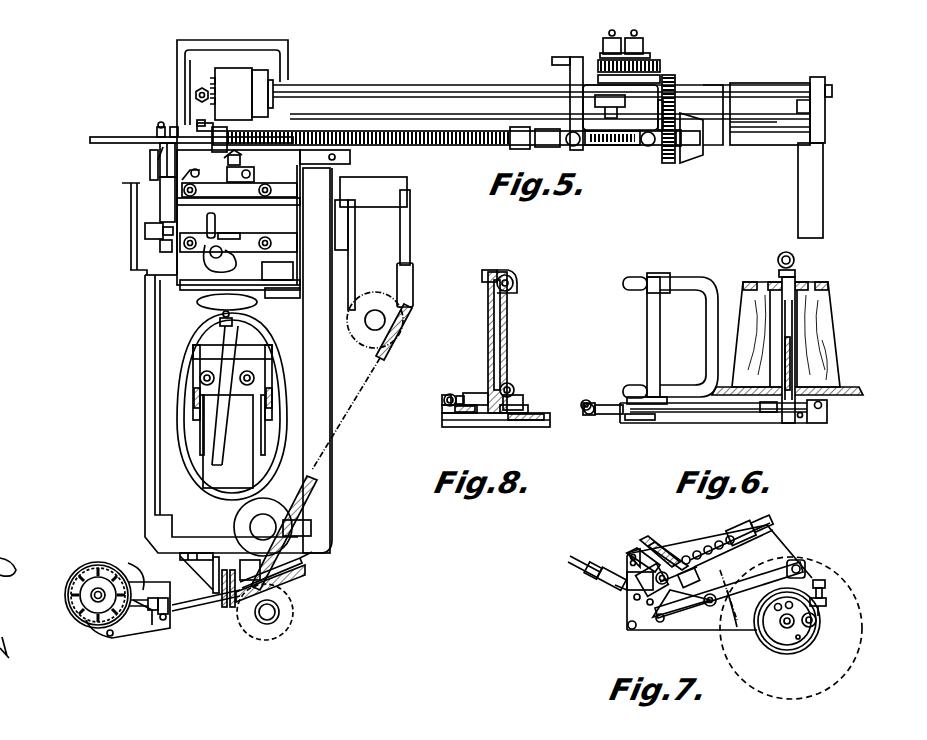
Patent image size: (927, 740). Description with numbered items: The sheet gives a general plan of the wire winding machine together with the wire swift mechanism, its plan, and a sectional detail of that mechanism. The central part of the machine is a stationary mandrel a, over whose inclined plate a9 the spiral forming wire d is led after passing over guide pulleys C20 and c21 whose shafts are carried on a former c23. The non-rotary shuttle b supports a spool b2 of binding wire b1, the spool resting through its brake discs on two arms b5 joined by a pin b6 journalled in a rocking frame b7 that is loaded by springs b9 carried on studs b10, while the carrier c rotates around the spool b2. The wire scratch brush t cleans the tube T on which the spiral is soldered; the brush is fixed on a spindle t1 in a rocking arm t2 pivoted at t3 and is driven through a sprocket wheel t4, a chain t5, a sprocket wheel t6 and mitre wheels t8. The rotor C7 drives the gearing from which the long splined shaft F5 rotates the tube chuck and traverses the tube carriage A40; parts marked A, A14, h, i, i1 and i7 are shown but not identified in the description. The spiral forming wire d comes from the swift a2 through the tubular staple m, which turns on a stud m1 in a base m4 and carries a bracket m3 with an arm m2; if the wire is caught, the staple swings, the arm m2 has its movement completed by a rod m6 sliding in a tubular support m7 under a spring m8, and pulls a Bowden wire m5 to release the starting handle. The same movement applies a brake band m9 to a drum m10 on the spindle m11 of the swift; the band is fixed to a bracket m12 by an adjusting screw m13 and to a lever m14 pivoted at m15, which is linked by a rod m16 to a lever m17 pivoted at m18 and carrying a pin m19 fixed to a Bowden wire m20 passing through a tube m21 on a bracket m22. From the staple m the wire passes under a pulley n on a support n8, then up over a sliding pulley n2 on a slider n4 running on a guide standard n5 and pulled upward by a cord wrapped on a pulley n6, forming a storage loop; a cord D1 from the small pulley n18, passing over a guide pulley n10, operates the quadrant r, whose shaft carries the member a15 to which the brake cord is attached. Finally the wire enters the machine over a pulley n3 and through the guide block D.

In FIG. 5, the tube T is at (122, 137).
In FIG. 5, the supporting pin A is at (122, 183).
In FIG. 5, the horizontal guide bar A14 is at (403, 115).
In FIG. 5, the tube carriage A40 is at (575, 57).
In FIG. 5, the splined shaft F5 is at (498, 95).
In FIG. 5, the mandrel a is at (237, 132).
In FIG. 5, the swift a2 is at (97, 562).
In FIG. 6, the swift a2 is at (825, 322).
In FIG. 5, the inclined plate a9 is at (239, 190).
In FIG. 5, the member a15 is at (410, 195).
In FIG. 5, the wire scratch brush t is at (200, 122).
In FIG. 5, the spindle t1 is at (150, 152).
In FIG. 5, the rocking arm t2 is at (160, 160).
In FIG. 5, the pivot t3 is at (145, 231).
In FIG. 5, the sprocket wheel t4 is at (164, 125).
In FIG. 5, the chain t5 is at (223, 162).
In FIG. 5, the sprocket wheel t6 is at (160, 247).
In FIG. 5, the mitre wheels t8 is at (232, 233).
In FIG. 5, the guide pulley C20 is at (228, 160).
In FIG. 5, the guide pulley c21 is at (240, 160).
In FIG. 5, the former c23 is at (252, 173).
In FIG. 5, the rotor C7 is at (258, 222).
In FIG. 5, the lower slide rail h is at (280, 240).
In FIG. 5, the cam i is at (197, 305).
In FIG. 5, the cam bracket i1 is at (282, 298).
In FIG. 5, the cam lever i7 is at (205, 225).
In FIG. 5, the shuttle b is at (193, 360).
In FIG. 5, the binding wire b1 is at (200, 405).
In FIG. 5, the spool b2 is at (240, 455).
In FIG. 5, the arms b5 is at (193, 378).
In FIG. 5, the pin b6 is at (230, 326).
In FIG. 5, the rocking frame b7 is at (226, 395).
In FIG. 5, the springs b9 is at (200, 378).
In FIG. 5, the studs b10 is at (194, 390).
In FIG. 5, the carrier c is at (287, 465).
In FIG. 5, the guide block D is at (292, 540).
In FIG. 5, the cord D1 is at (355, 400).
In FIG. 5, the spiral forming wire d is at (176, 603).
In FIG. 7, the spiral forming wire d is at (738, 647).
In FIG. 5, the quadrant r is at (413, 285).
In FIG. 5, the pulley n is at (305, 574).
In FIG. 5, the sliding pulley n2 is at (310, 580).
In FIG. 5, the pulley n3 is at (226, 608).
In FIG. 5, the slider n4 is at (252, 630).
In FIG. 5, the guide standard n5 is at (279, 612).
In FIG. 5, the pulley n6 is at (317, 483).
In FIG. 5, the support n8 is at (262, 568).
In FIG. 5, the guide pulley n10 is at (386, 356).
In FIG. 5, the small pulley n18 is at (311, 530).
In FIG. 5, the tubular staple m is at (130, 567).
In FIG. 8, the tubular staple m is at (522, 385).
In FIG. 6, the tubular staple m is at (683, 278).
In FIG. 5, the stud m1 is at (170, 608).
In FIG. 8, the stud m1 is at (507, 325).
In FIG. 6, the stud m1 is at (647, 311).
In FIG. 7, the stud m1 is at (640, 608).
In FIG. 8, the arm m2 is at (478, 393).
In FIG. 7, the arm m2 is at (664, 560).
In FIG. 5, the staple carrying bracket m3 is at (163, 620).
In FIG. 8, the staple carrying bracket m3 is at (512, 385).
In FIG. 6, the staple carrying bracket m3 is at (675, 400).
In FIG. 7, the staple carrying bracket m3 is at (660, 620).
In FIG. 5, the base m4 is at (143, 590).
In FIG. 8, the base m4 is at (530, 414).
In FIG. 6, the base m4 is at (690, 423).
In FIG. 7, the base m4 is at (700, 545).
In FIG. 7, the Bowden wire m5 is at (663, 542).
In FIG. 8, the rod m6 is at (455, 393).
In FIG. 7, the rod m6 is at (646, 540).
In FIG. 8, the tubular support m7 is at (442, 402).
In FIG. 7, the tubular support m7 is at (748, 530).
In FIG. 8, the spring m8 is at (460, 413).
In FIG. 7, the spring m8 is at (710, 546).
In FIG. 6, the brake band m9 is at (768, 415).
In FIG. 7, the brake band m9 is at (782, 652).
In FIG. 6, the drum m10 is at (808, 425).
In FIG. 7, the drum m10 is at (800, 640).
In FIG. 5, the spindle m11 is at (93, 592).
In FIG. 7, the spindle m11 is at (794, 624).
In FIG. 7, the bracket m12 is at (805, 575).
In FIG. 7, the adjusting screw m13 is at (826, 604).
In FIG. 7, the lever m14 is at (820, 580).
In FIG. 7, the pivot m15 is at (783, 560).
In FIG. 6, the rod m16 is at (735, 415).
In FIG. 7, the rod m16 is at (690, 605).
In FIG. 6, the lever m17 is at (796, 370).
In FIG. 7, the lever m17 is at (628, 553).
In FIG. 7, the pivot m18 is at (630, 550).
In FIG. 6, the pin m19 is at (638, 420).
In FIG. 7, the pin m19 is at (625, 590).
In FIG. 6, the Bowden wire m20 is at (605, 403).
In FIG. 7, the Bowden wire m20 is at (605, 582).
In FIG. 8, the tube m21 is at (582, 410).
In FIG. 6, the bracket m22 is at (592, 415).
In FIG. 7, the bracket m22 is at (588, 568).